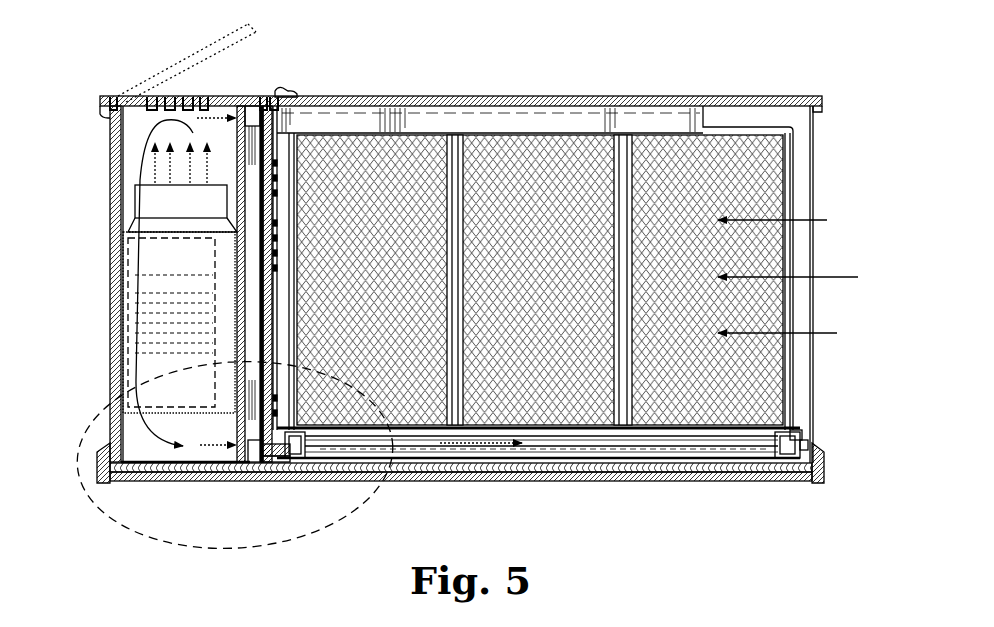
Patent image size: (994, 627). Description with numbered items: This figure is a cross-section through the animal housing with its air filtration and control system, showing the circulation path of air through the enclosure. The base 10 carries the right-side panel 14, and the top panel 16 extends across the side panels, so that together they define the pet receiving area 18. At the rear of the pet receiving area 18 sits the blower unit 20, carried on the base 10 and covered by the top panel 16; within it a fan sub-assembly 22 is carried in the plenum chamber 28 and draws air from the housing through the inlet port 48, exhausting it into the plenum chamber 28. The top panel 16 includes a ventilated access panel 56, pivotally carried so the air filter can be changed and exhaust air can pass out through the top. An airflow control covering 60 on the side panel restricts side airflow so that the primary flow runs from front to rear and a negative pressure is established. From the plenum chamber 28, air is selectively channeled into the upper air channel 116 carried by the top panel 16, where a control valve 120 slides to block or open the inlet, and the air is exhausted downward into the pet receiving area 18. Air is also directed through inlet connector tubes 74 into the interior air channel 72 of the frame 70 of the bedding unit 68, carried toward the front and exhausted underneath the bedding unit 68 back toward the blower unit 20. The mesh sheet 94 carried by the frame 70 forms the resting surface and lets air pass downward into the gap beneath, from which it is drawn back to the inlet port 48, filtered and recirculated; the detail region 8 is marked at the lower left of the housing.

The lower housing detail region 8 is at (150, 533).
The base 10 is at (822, 478).
The right-side panel 14 is at (800, 145).
The top panel 16 is at (688, 96).
The pet receiving area 18 is at (612, 201).
The blower unit 20 is at (110, 313).
The fan sub-assembly 22 is at (130, 228).
The plenum chamber 28 is at (150, 438).
The inlet port 48 is at (283, 279).
The ventilated access panel 56 is at (139, 97).
The airflow control covering 60 is at (530, 150).
The bedding unit 68 is at (798, 432).
The frame 70 is at (630, 458).
The interior air channel 72 is at (302, 460).
The inlet connector tubes 74 is at (262, 458).
The mesh sheet 94 is at (558, 430).
The upper air channel 116 is at (450, 122).
The control valve 120 is at (284, 90).